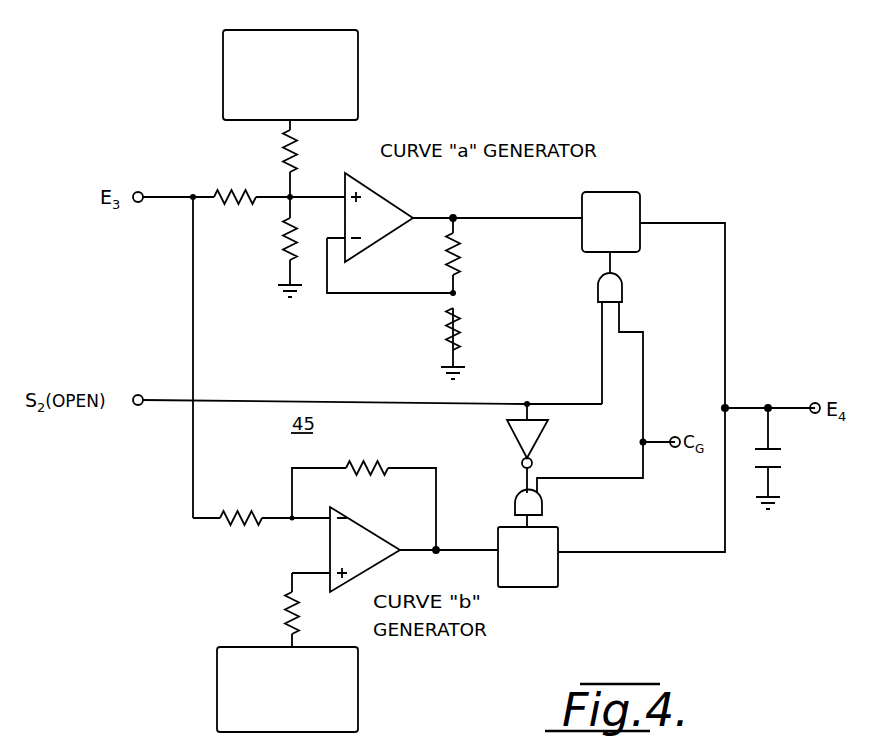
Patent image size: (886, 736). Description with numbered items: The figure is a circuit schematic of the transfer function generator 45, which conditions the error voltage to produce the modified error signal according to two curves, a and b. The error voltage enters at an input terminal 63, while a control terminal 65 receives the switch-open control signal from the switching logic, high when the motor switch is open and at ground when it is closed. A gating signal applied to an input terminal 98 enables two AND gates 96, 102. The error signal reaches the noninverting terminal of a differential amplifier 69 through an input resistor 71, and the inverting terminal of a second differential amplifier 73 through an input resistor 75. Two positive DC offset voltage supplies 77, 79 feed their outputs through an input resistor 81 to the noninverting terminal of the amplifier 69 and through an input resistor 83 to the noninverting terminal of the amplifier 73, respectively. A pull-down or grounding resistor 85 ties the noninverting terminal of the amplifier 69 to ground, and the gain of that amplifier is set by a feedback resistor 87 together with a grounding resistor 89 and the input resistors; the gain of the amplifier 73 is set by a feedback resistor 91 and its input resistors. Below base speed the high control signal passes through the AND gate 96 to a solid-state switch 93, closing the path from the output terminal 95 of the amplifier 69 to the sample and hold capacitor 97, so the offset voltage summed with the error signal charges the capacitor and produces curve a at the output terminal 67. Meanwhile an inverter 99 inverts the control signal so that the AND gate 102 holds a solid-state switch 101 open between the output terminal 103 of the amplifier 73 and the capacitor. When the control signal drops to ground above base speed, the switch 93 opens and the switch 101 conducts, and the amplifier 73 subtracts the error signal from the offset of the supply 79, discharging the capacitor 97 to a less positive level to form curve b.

The positive DC offset voltage supply 77 is at (357, 33).
The input terminal 63 is at (138, 191).
The input resistor 71 is at (228, 189).
The input resistor 81 is at (298, 152).
The pull-down or grounding resistor 85 is at (282, 235).
The differential amplifier 69 is at (377, 253).
The output terminal 95 is at (453, 214).
The feedback resistor 87 is at (461, 272).
The grounding resistor 89 is at (460, 347).
The solid-state switch 93 is at (618, 192).
The AND gate 96 is at (622, 292).
The control terminal 65 is at (139, 395).
The transfer function generator 45 is at (303, 465).
The feedback resistor 91 is at (365, 462).
The input resistor 75 is at (234, 511).
The differential amplifier 73 is at (376, 532).
The output terminal 103 is at (438, 545).
The inverter 99 is at (540, 436).
The AND gate 102 is at (541, 503).
The solid-state switch 101 is at (558, 578).
The input terminal 98 is at (675, 437).
The output terminal 67 is at (812, 403).
The sample and hold capacitor 97 is at (782, 454).
The input resistor 83 is at (285, 600).
The positive DC offset voltage supply 79 is at (358, 688).